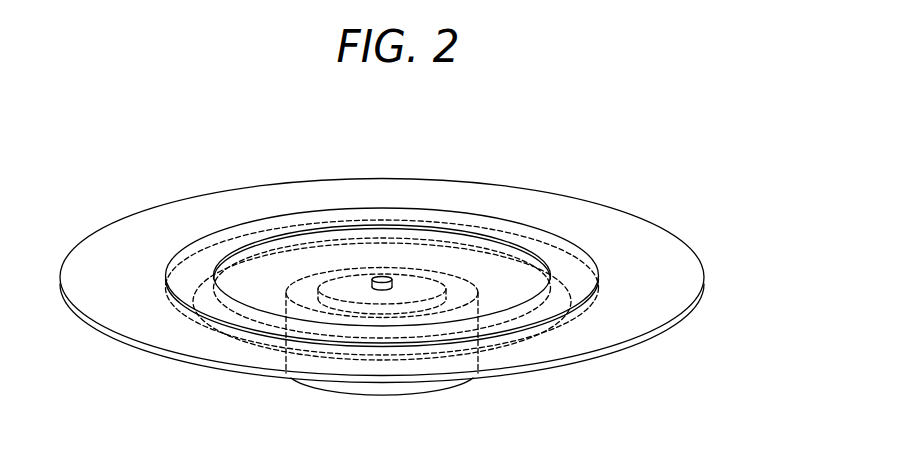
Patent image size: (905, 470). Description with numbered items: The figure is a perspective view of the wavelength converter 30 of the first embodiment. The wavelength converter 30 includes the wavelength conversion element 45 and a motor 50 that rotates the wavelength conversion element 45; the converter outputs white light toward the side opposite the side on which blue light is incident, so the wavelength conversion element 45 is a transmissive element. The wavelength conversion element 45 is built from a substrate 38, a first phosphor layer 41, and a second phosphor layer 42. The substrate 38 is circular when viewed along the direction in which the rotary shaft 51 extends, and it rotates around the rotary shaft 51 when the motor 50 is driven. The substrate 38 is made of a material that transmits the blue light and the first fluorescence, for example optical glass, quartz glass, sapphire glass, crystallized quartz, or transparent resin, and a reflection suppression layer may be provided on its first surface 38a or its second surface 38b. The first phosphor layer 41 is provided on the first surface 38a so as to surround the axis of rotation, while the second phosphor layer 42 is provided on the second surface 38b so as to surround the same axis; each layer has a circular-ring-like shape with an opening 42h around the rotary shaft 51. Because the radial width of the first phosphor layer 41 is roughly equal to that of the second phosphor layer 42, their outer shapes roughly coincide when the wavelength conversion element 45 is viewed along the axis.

The wavelength converter 30 is at (536, 158).
The substrate 38 is at (705, 283).
The first surface 38a is at (500, 297).
The second surface 38b is at (498, 267).
The first phosphor layer 41 is at (228, 335).
The second phosphor layer 42 is at (225, 228).
The opening 42h is at (304, 246).
The wavelength conversion element 45 is at (464, 164).
The motor 50 is at (360, 389).
The rotary shaft 51 is at (384, 276).